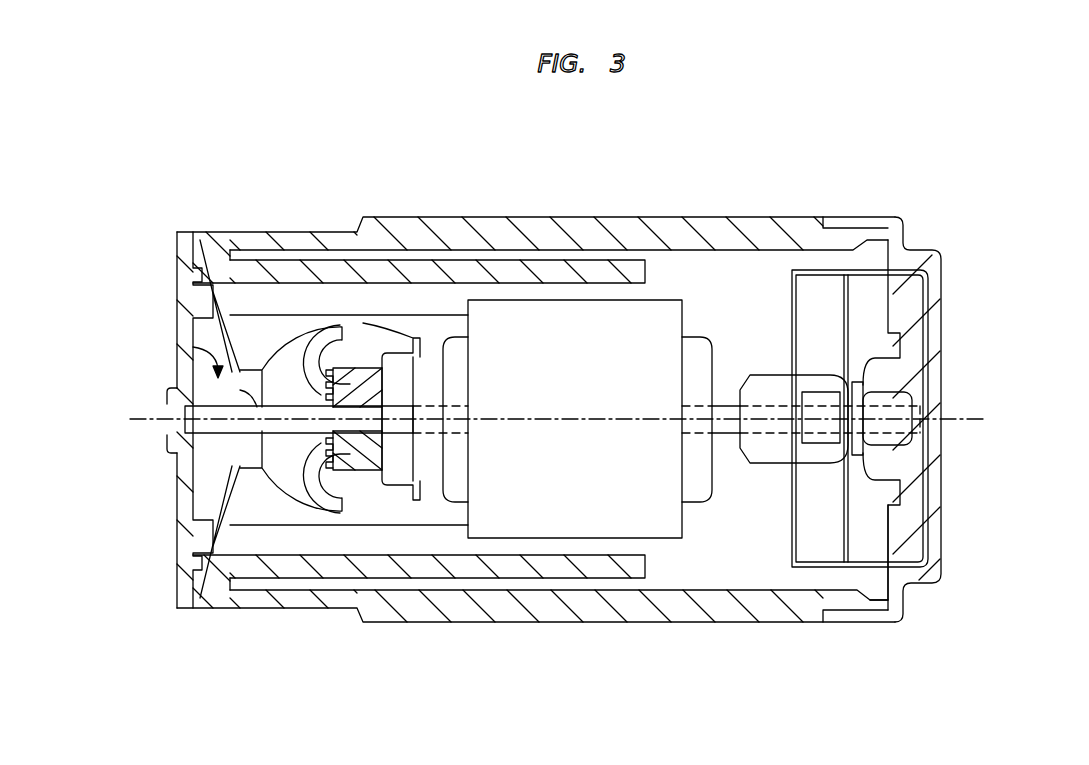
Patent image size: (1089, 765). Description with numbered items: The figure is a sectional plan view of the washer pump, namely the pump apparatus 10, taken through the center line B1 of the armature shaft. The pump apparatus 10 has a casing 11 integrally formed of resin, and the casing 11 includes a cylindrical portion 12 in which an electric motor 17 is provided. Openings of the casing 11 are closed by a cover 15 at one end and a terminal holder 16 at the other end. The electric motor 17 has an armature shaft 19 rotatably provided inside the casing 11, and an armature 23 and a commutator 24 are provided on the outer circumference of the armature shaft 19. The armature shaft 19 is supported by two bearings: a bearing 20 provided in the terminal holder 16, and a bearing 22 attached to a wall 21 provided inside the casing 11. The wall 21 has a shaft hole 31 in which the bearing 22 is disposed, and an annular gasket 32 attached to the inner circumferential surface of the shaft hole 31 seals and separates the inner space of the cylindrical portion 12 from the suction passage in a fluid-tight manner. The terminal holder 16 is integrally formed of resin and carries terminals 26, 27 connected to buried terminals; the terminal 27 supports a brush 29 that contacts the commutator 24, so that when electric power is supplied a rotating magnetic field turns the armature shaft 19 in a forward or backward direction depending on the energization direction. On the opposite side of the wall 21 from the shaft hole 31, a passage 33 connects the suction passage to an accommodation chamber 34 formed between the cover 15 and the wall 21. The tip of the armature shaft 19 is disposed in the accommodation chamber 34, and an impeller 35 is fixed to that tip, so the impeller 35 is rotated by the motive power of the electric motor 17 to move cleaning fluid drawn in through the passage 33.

The pump apparatus 10 is at (487, 637).
The casing 11 is at (597, 203).
The cylindrical portion 12 is at (598, 605).
The cover 15 is at (170, 457).
The terminal holder 16 is at (955, 263).
The electric motor 17 is at (707, 258).
The armature shaft 19 is at (720, 434).
The bearing 20 is at (902, 380).
The wall 21 is at (378, 510).
The bearing 22 is at (401, 376).
The armature 23 is at (522, 335).
The commutator 24 is at (745, 373).
The terminal 26 is at (930, 322).
The terminal 27 is at (940, 490).
The brush 29 is at (815, 446).
The shaft hole 31 is at (300, 385).
The gasket 32 is at (352, 366).
The passage 33 is at (252, 370).
The accommodation chamber 34 is at (212, 497).
The impeller 35 is at (193, 347).
The center line of the armature shaft B1 is at (985, 419).